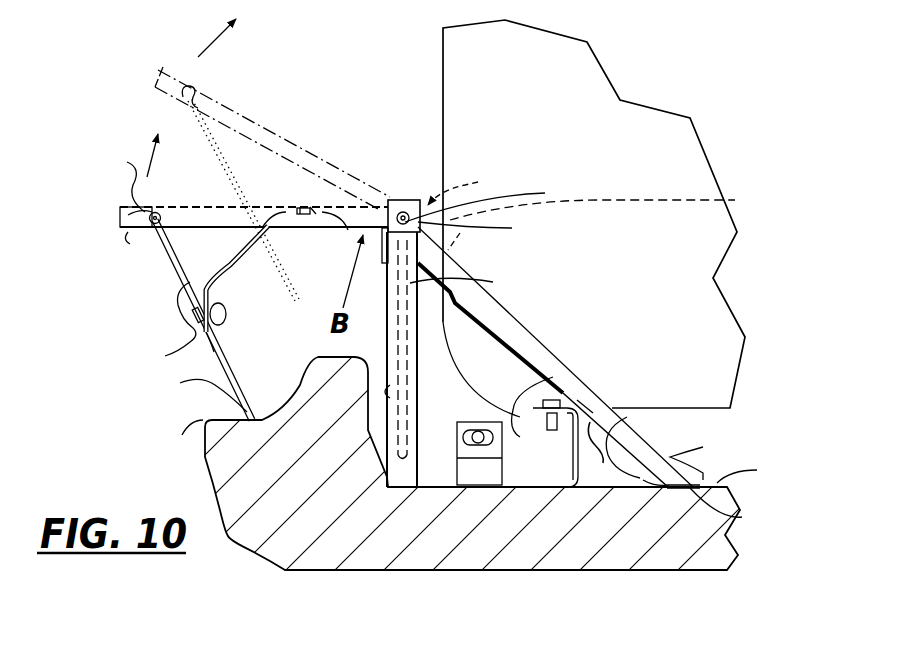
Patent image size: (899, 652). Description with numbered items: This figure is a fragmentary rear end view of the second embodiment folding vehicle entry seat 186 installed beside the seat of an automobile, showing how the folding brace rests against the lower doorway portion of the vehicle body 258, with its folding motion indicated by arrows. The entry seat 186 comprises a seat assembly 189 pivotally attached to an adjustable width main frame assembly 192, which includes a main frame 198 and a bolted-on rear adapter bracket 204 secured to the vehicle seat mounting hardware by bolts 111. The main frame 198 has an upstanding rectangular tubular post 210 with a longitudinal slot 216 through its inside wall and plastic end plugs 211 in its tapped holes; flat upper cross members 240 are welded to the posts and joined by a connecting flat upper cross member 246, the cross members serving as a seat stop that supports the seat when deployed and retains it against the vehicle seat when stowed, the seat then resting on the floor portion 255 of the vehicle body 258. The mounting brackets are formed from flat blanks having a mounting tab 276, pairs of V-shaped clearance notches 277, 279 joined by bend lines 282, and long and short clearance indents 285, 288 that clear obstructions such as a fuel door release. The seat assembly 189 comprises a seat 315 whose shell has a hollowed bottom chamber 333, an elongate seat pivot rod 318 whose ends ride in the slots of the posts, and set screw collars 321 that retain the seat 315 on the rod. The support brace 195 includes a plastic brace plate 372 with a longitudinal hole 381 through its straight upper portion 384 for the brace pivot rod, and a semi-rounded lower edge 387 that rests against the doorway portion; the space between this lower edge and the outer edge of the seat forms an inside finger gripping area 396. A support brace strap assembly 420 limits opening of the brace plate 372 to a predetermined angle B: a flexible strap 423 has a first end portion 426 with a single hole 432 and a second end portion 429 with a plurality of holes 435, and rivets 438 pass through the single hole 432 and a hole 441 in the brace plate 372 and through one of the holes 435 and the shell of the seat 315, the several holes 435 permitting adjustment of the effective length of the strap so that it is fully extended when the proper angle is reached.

The bolts 111 is at (577, 400).
The entry seat 186 is at (152, 114).
The seat assembly 189 is at (118, 218).
The adjustable width main frame assembly 192 is at (434, 320).
The support brace 195 is at (166, 272).
The main frame 198 is at (575, 214).
The rear adapter bracket 204 is at (585, 344).
The tubular post 210 is at (417, 393).
The plastic end plugs 211 is at (413, 200).
The longitudinal slot 216 is at (410, 357).
The flat upper cross members 240 is at (410, 250).
The connecting flat upper cross member 246 is at (475, 284).
The floor portion 255 is at (755, 473).
The vehicle body 258 is at (472, 572).
The mounting tab 276 is at (486, 224).
The V-shaped clearance notch 277 is at (652, 480).
The V-shaped clearance notch 279 is at (627, 417).
The bend lines 282 is at (623, 423).
The long clearance indent 285 is at (578, 372).
The short clearance indent 288 is at (520, 437).
The seat 315 is at (211, 206).
The seat pivot rod 318 is at (128, 215).
The set screw collars 321 is at (403, 200).
The hollowed bottom chamber 333 is at (290, 213).
The brace plate 372 is at (182, 385).
The longitudinal hole 381 is at (301, 179).
The straight upper portion 384 is at (158, 224).
The semi-rounded lower edge 387 is at (182, 435).
The inside finger gripping area 396 is at (128, 238).
The support brace strap assembly 420 is at (234, 308).
The flexible strap 423 is at (226, 268).
The first end portion 426 is at (182, 300).
The second end portion 429 is at (346, 232).
The single hole 432 is at (208, 325).
The holes 435 is at (316, 207).
The rivets 438 is at (182, 335).
The hole 441 is at (305, 207).